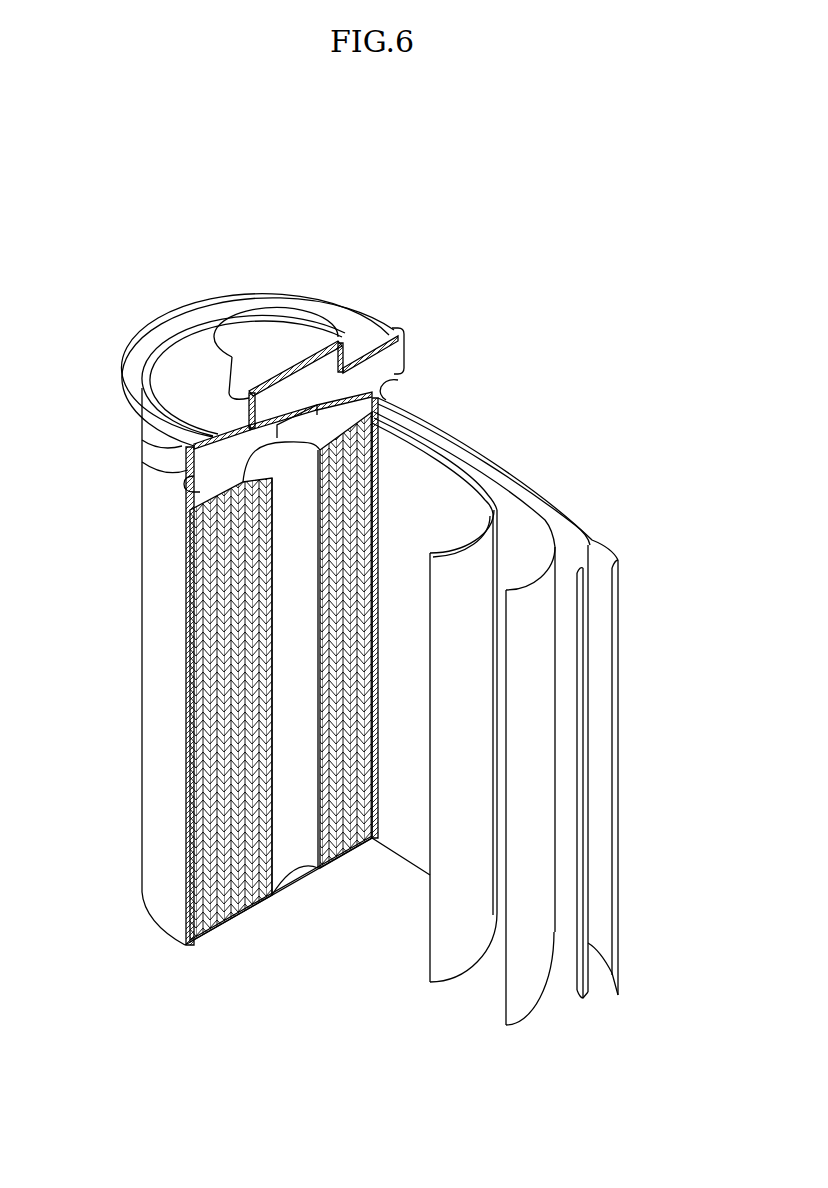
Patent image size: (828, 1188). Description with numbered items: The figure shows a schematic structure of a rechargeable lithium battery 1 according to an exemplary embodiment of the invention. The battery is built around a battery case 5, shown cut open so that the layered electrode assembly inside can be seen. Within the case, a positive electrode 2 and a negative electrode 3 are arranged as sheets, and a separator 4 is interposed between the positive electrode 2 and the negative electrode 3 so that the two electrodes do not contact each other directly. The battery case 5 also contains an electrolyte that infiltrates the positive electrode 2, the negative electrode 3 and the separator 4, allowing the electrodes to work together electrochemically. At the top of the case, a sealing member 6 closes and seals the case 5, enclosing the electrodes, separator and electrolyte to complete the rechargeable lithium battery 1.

The rechargeable lithium battery 1 is at (291, 246).
The positive electrode 2 is at (620, 650).
The negative electrode 3 is at (536, 573).
The separator 4 is at (465, 972).
The battery case 5 is at (172, 802).
The sealing member 6 is at (258, 352).